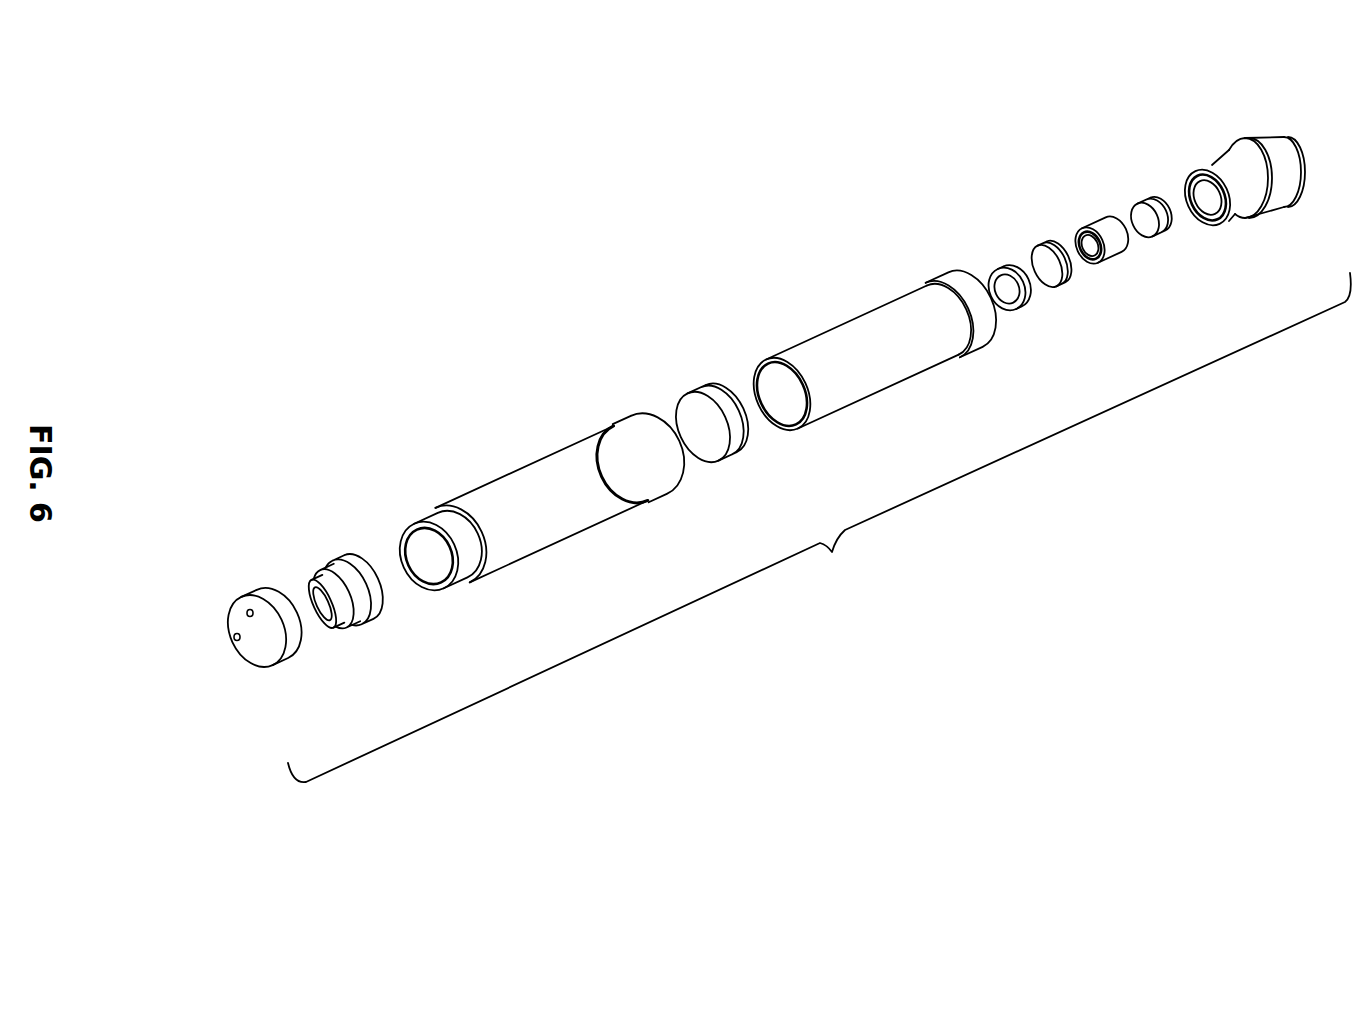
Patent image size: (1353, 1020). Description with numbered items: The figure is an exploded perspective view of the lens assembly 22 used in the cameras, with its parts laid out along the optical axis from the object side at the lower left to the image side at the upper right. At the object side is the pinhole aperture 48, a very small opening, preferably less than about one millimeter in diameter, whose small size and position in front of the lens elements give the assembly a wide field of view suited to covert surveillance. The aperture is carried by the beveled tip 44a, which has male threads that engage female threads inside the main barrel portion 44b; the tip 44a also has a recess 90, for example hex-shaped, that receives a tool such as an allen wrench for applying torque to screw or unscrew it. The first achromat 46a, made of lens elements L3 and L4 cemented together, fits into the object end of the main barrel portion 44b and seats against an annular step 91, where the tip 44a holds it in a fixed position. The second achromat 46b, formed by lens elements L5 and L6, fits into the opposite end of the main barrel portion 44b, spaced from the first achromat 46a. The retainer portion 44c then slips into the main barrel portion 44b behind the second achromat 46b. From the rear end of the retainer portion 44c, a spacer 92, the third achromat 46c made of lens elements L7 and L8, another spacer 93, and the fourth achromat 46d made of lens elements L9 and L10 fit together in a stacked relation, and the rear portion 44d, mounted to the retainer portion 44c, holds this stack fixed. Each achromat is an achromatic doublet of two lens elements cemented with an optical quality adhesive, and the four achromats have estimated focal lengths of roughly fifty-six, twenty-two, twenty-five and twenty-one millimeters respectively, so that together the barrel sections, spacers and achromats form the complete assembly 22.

The lens assembly 22 is at (819, 527).
The beveled tip 44a is at (265, 592).
The main barrel portion 44b is at (548, 450).
The retainer portion 44c is at (865, 312).
The rear portion 44d is at (1232, 150).
The first achromat 46a is at (348, 558).
The second achromat 46b is at (702, 390).
The third achromat 46c is at (1048, 244).
The fourth achromat 46d is at (1147, 200).
The pinhole aperture 48 is at (234, 638).
The recess 90 is at (247, 612).
The annular step 91 is at (428, 585).
The spacer 92 is at (1008, 266).
The spacer 93 is at (1103, 220).
The lens element L3 is at (332, 608).
The lens element L4 is at (372, 605).
The lens element L5 is at (715, 452).
The lens element L6 is at (748, 437).
The lens element L7 is at (1051, 278).
The lens element L8 is at (1071, 264).
The lens element L9 is at (1150, 236).
The lens element L10 is at (1166, 224).